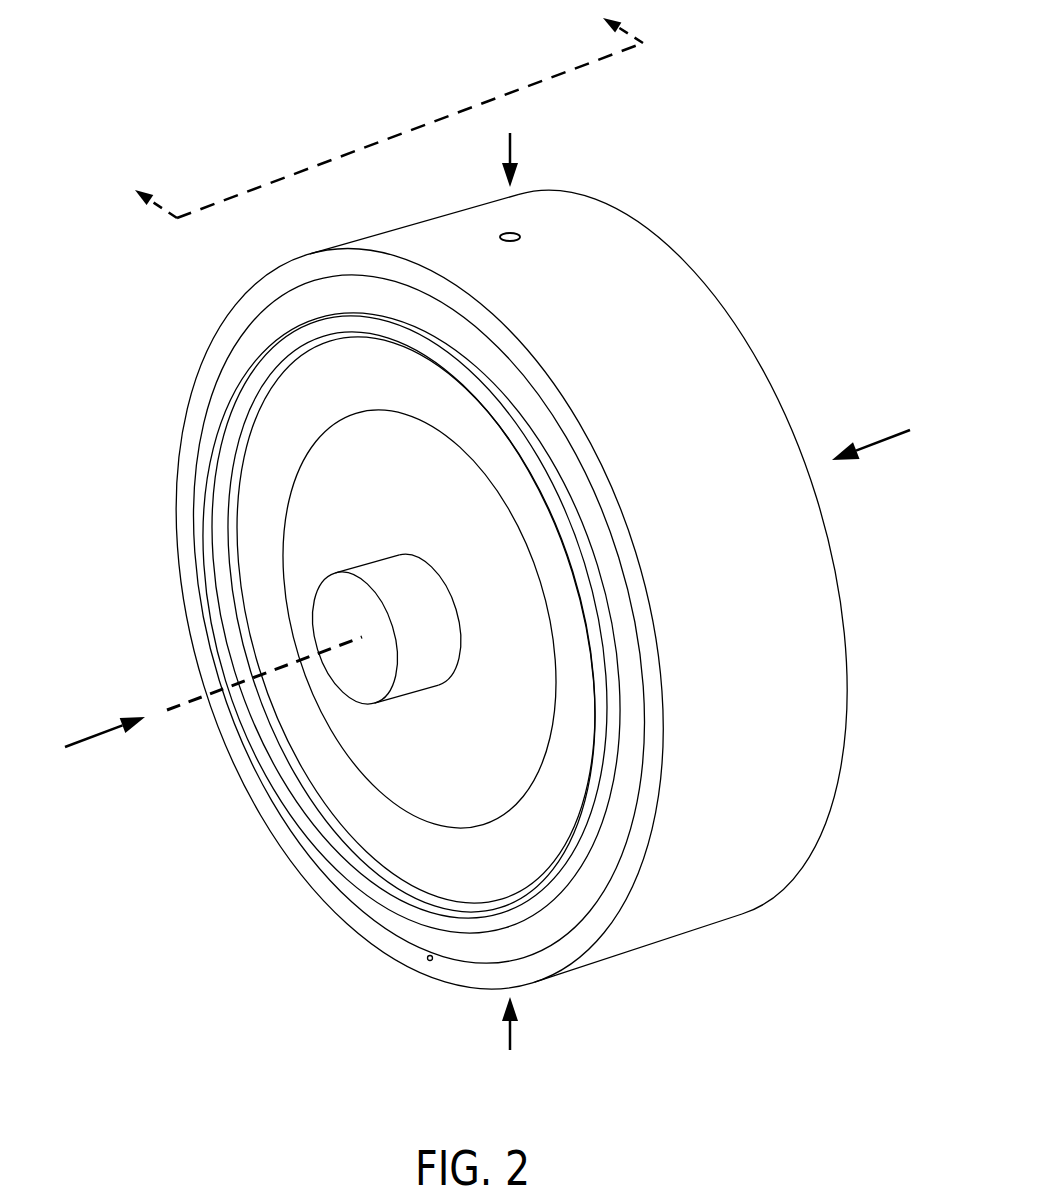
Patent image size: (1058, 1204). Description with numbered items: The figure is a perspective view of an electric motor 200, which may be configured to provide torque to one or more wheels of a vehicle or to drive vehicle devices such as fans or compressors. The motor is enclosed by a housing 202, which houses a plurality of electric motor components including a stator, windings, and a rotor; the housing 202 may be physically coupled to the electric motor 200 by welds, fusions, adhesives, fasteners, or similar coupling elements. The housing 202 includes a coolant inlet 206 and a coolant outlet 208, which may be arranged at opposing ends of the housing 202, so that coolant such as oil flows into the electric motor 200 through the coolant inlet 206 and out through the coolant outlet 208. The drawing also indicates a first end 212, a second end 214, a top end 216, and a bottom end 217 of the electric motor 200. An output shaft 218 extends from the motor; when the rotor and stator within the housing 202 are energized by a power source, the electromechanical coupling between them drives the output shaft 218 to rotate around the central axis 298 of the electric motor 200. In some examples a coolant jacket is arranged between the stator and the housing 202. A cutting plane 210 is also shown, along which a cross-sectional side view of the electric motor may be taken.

The electric motor 200 is at (725, 184).
The housing 202 is at (573, 240).
The coolant inlet 206 is at (511, 231).
The coolant outlet 208 is at (430, 962).
The cutting plane 210 is at (270, 183).
The first end 212 is at (105, 725).
The second end 214 is at (892, 433).
The top end 216 is at (514, 152).
The bottom end 217 is at (512, 1028).
The output shaft 218 is at (412, 655).
The central axis 298 is at (177, 703).